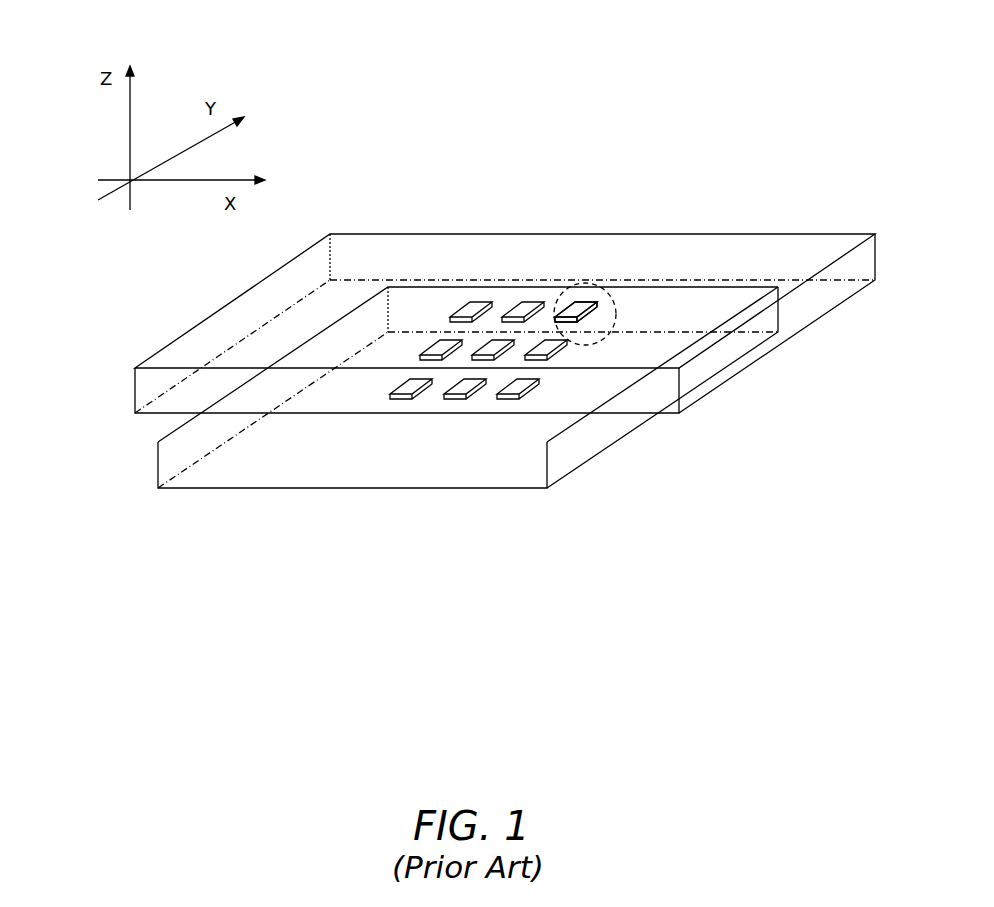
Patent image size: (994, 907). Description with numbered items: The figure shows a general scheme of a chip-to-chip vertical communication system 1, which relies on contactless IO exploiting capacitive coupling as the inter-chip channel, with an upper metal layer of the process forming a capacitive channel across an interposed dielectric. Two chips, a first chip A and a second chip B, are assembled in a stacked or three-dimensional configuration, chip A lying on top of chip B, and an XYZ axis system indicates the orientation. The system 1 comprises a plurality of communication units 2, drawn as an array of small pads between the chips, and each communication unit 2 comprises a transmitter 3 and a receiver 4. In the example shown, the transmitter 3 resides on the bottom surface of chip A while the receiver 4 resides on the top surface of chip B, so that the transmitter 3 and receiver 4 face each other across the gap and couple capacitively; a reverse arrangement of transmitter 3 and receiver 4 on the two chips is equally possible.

The chip-to-chip communication system 1 is at (627, 126).
The communication unit 2 is at (550, 295).
The transmitter 3 is at (591, 292).
The receiver 4 is at (590, 330).